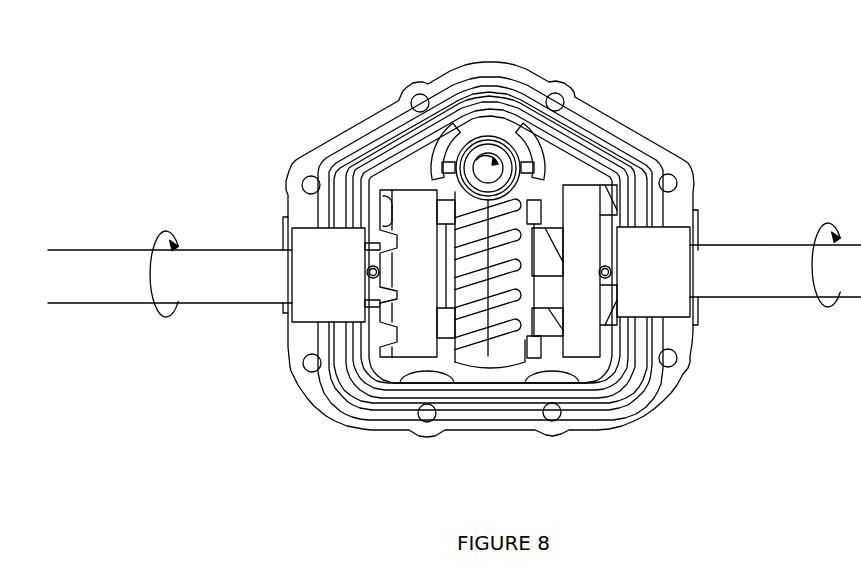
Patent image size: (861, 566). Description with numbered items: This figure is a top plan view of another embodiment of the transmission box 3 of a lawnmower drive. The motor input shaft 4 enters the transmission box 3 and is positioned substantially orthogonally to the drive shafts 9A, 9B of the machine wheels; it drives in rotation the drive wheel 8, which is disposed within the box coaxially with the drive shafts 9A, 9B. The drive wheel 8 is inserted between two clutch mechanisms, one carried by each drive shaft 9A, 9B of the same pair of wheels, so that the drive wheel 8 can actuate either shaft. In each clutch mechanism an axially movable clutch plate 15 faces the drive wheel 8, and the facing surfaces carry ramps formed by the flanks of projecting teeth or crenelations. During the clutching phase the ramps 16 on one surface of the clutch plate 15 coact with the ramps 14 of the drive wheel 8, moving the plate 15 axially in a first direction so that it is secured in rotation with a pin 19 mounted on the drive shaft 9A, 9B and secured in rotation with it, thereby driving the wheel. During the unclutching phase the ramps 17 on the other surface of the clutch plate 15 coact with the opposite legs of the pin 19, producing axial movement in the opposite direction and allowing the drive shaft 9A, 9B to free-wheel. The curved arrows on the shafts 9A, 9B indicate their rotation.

The transmission box 3 is at (647, 133).
The motor input shaft 4 is at (488, 136).
The drive wheel 8 is at (478, 335).
The drive shaft 9A is at (738, 255).
The drive shaft 9B is at (222, 260).
The ramps 14 is at (533, 228).
The clutch plate 15 is at (577, 330).
The ramps 16 is at (445, 233).
The ramps 17 is at (606, 290).
The pin 19 is at (370, 262).